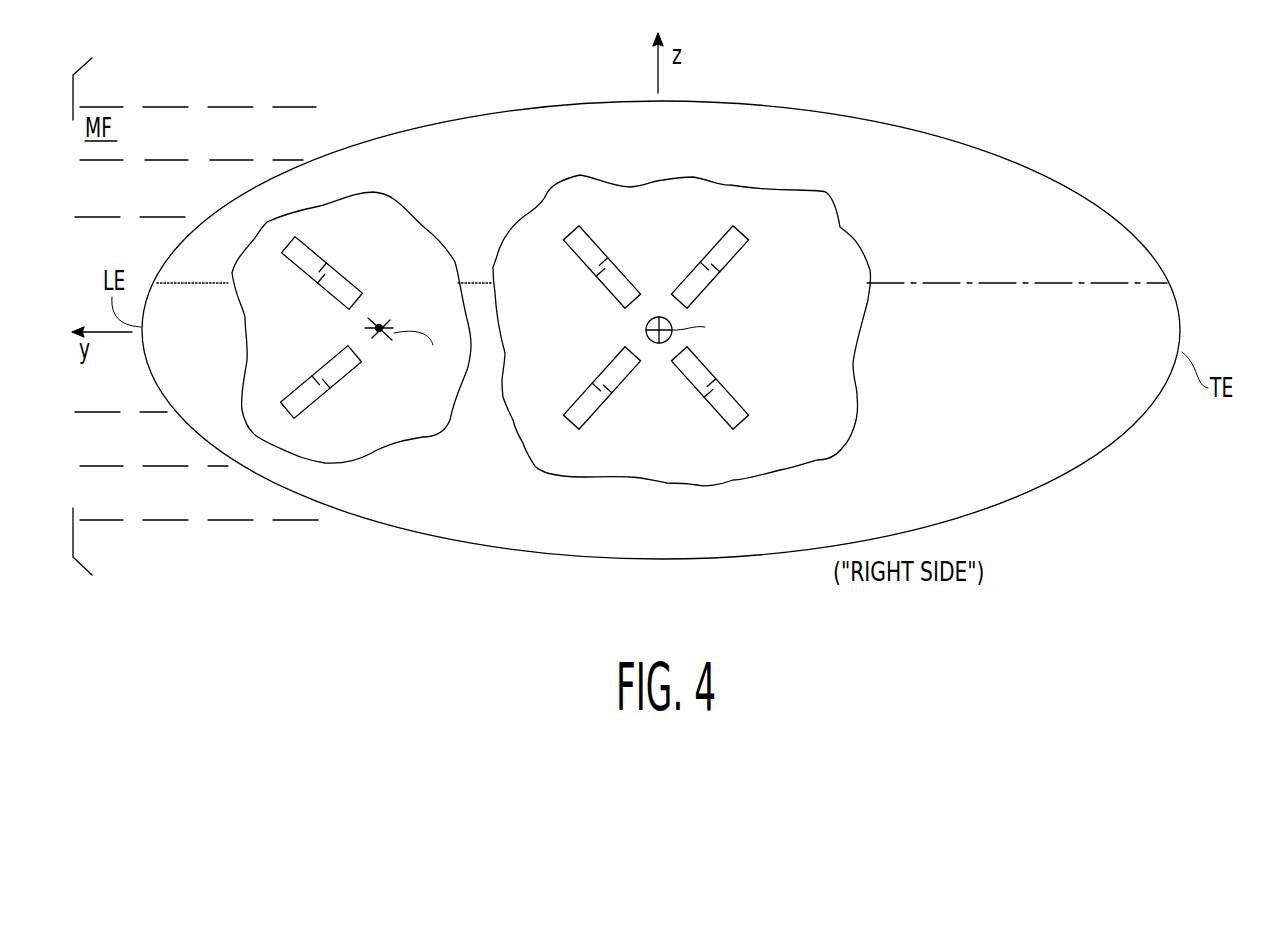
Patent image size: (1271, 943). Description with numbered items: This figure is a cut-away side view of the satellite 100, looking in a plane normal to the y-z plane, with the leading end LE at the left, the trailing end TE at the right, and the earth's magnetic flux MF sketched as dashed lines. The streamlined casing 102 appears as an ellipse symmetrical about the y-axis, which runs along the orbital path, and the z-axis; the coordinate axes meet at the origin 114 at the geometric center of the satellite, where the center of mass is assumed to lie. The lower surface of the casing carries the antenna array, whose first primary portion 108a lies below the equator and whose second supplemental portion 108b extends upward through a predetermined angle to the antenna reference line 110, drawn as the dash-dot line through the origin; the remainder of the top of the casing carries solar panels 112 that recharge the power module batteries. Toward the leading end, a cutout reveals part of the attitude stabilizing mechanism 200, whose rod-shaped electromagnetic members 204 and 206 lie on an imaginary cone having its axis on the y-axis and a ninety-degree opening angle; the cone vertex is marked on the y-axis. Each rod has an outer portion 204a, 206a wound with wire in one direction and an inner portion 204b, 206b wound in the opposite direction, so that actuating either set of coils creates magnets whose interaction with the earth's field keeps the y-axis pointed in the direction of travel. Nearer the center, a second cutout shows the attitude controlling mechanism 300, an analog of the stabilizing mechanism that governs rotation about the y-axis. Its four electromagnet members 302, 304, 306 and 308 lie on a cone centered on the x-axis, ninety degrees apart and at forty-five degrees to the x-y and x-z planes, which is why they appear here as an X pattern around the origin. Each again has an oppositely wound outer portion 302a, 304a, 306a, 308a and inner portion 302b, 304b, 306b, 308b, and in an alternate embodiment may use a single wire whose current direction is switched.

The satellite 100 is at (1008, 129).
The casing 102 is at (873, 121).
The first primary portion of antenna array 108a is at (1107, 467).
The second supplemental portion of antenna array 108b is at (1023, 435).
The antenna reference line 110 is at (1102, 283).
The solar panels 112 is at (1053, 196).
The origin 114 is at (646, 330).
The attitude stabilizing mechanism 200 is at (292, 308).
The electromagnetic stabilizing member 204 is at (362, 303).
The outer portion of stabilizing member 204a is at (305, 254).
The inner portion of stabilizing member 204b is at (344, 286).
The electromagnetic stabilizing member 206 is at (287, 416).
The outer portion of stabilizing member 206a is at (302, 390).
The inner portion of stabilizing member 206b is at (343, 370).
The attitude controlling mechanism 300 is at (842, 336).
The electromagnet stabilizing member 302 is at (572, 234).
The outer portion of controlling member 302a is at (588, 258).
The inner portion of controlling member 302b is at (612, 274).
The electromagnet stabilizing member 304 is at (743, 235).
The outer portion of controlling member 304a is at (733, 256).
The inner portion of controlling member 304b is at (698, 293).
The electromagnet stabilizing member 306 is at (738, 426).
The outer portion of controlling member 306a is at (725, 400).
The inner portion of controlling member 306b is at (698, 365).
The electromagnet stabilizing member 308 is at (572, 424).
The outer portion of controlling member 308a is at (583, 408).
The inner portion of controlling member 308b is at (608, 377).